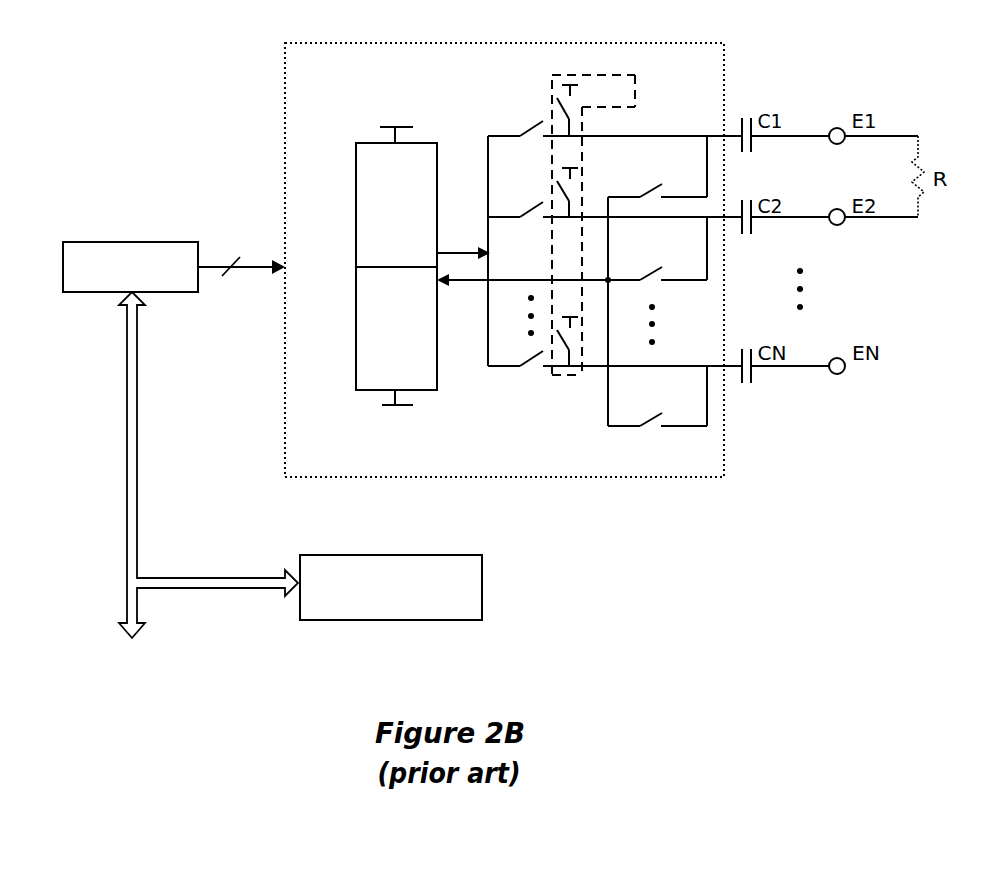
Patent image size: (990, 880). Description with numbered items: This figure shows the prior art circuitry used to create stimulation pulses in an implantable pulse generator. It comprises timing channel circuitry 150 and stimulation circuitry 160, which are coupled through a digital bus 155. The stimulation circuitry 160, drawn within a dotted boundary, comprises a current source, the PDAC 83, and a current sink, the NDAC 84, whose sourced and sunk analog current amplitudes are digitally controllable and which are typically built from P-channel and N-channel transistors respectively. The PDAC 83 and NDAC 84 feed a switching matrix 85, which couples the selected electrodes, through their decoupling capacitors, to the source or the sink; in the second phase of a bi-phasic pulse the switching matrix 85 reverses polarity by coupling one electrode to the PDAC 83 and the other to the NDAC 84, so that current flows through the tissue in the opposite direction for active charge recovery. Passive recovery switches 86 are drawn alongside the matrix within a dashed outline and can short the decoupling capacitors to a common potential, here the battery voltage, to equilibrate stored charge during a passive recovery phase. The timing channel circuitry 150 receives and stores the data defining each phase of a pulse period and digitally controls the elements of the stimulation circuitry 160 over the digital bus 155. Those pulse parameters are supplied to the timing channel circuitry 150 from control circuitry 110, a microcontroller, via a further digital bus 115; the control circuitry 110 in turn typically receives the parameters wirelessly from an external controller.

The timing channel circuitry 150 is at (130, 267).
The digital bus 155 is at (228, 257).
The stimulation circuitry 160 is at (283, 173).
The current source (PDAC) 83 is at (417, 191).
The current sink (NDAC) 84 is at (467, 343).
The switching matrix 85 is at (638, 442).
The passive recovery switches 86 is at (550, 110).
The control circuitry (microcontroller) 110 is at (391, 587).
The digital bus 115 is at (127, 613).